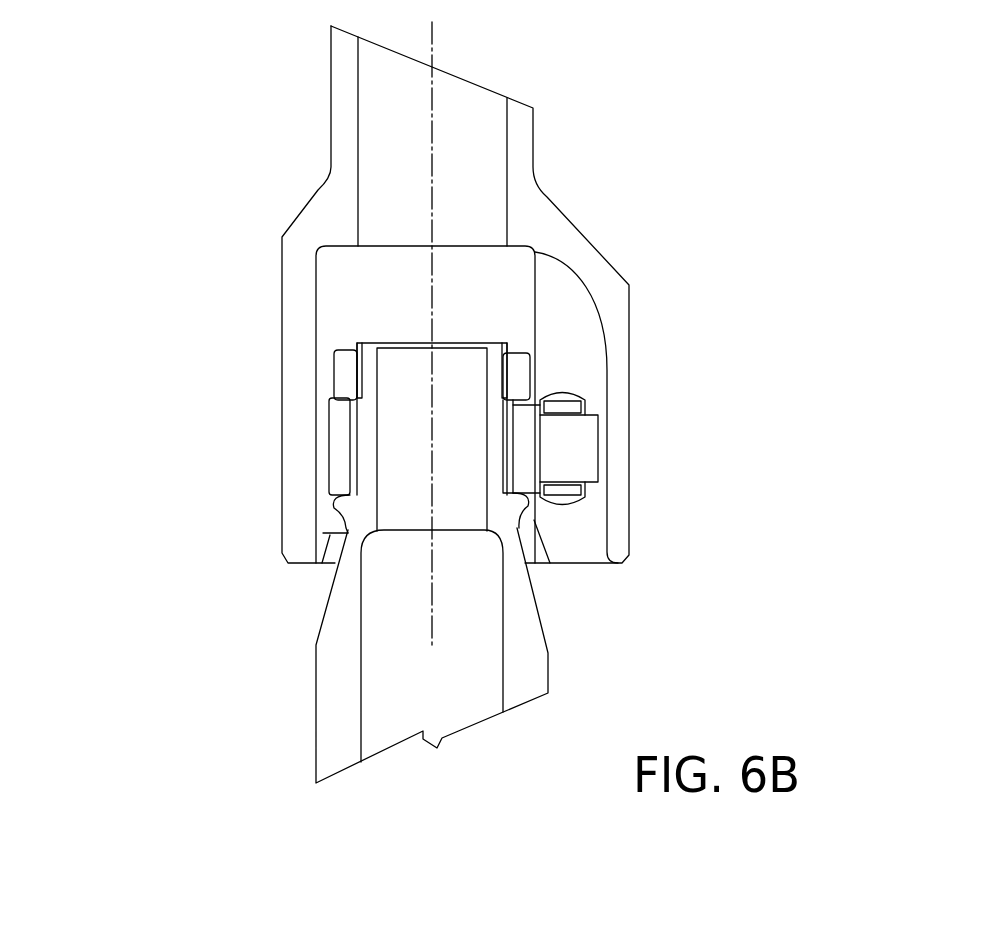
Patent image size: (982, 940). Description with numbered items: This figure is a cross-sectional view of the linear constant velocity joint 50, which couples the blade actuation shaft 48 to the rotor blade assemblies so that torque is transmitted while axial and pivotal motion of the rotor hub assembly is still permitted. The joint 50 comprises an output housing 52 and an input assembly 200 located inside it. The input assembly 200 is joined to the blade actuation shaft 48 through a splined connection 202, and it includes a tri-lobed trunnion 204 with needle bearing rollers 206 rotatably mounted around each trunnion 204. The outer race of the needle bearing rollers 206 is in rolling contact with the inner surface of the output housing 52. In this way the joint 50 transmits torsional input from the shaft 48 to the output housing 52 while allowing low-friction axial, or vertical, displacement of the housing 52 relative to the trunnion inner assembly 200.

The blade actuation shaft 48 is at (303, 670).
The linear constant velocity joint 50 is at (351, 294).
The output housing 52 is at (592, 238).
The input assembly 200 is at (571, 456).
The splined connection 202 is at (353, 468).
The tri-lobed trunnion 204 is at (583, 465).
The needle bearing rollers 206 is at (566, 396).